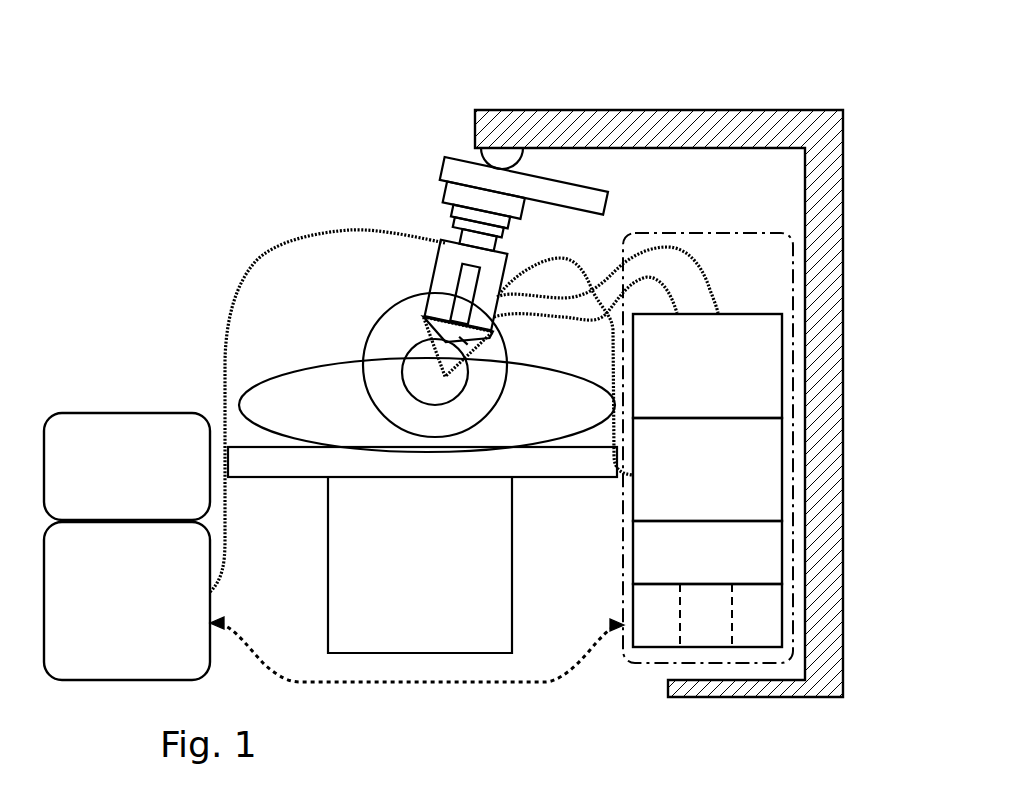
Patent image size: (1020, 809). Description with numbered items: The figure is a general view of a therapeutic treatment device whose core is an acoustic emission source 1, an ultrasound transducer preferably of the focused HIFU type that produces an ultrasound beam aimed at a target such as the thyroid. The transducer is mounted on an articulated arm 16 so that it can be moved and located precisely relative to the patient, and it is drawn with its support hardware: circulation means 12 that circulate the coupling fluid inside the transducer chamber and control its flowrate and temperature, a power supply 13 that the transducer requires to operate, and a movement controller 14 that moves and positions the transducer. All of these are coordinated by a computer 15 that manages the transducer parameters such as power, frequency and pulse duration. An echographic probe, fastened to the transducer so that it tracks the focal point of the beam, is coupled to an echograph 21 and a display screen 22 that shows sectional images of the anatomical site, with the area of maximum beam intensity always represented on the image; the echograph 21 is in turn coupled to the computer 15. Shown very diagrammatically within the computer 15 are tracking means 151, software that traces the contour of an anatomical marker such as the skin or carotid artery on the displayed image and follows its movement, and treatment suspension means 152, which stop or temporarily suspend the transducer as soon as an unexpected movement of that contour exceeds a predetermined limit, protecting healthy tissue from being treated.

The acoustic emission source 1 is at (459, 232).
The circulation means 12 is at (707, 366).
The power supply 13 is at (707, 469).
The movement controller 14 is at (707, 552).
The computer 15 is at (707, 615).
The tracking means 151 is at (657, 615).
The treatment suspension means 152 is at (753, 615).
The articulated arm 16 is at (583, 122).
The echograph 21 is at (127, 601).
The display screen 22 is at (127, 466).